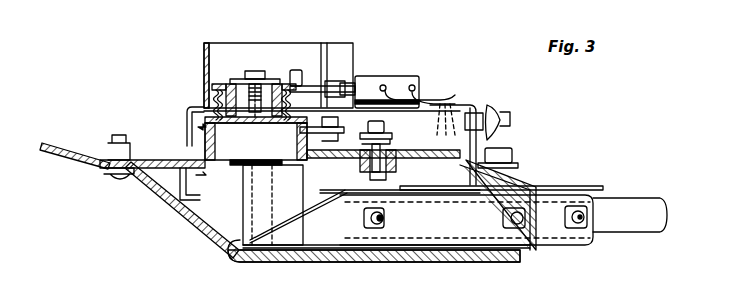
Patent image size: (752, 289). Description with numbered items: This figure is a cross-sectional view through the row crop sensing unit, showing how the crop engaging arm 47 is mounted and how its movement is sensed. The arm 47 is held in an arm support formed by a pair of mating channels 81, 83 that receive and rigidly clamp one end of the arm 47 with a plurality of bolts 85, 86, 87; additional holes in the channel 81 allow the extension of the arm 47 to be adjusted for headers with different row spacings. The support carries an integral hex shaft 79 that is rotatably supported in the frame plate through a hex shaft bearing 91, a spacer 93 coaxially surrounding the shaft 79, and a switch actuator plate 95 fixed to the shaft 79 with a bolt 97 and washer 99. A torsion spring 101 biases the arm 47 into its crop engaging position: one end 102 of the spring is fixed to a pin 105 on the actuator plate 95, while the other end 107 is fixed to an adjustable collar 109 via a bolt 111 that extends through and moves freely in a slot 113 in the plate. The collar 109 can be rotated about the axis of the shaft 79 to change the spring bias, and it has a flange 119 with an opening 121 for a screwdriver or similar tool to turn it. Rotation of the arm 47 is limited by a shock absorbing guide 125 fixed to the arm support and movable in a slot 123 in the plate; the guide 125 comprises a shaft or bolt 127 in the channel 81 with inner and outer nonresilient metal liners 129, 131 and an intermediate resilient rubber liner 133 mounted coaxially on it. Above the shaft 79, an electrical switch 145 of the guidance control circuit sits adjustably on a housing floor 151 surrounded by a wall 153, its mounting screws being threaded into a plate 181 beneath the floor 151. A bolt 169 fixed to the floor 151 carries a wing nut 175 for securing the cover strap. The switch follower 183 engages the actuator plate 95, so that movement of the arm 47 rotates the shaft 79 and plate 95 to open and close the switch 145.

The arm 47 is at (630, 198).
The hex shaft 79 is at (240, 254).
The channel 81 is at (568, 188).
The channel 83 is at (588, 242).
The bolt 85 is at (377, 226).
The bolt 86 is at (518, 228).
The bolt 87 is at (585, 220).
The hex shaft bearing 91 is at (200, 238).
The spacer 93 is at (222, 147).
The switch actuator plate 95 is at (212, 86).
The bolt 97 is at (256, 70).
The washer 99 is at (236, 80).
The torsion spring 101 is at (190, 118).
The spring end 102 is at (322, 88).
The pin 105 is at (296, 70).
The spring end 107 is at (370, 142).
The adjustable collar 109 is at (165, 175).
The bolt 111 is at (345, 128).
The slot 113 is at (320, 210).
The flange 119 is at (188, 200).
The opening 121 is at (185, 185).
The slot 123 is at (512, 155).
The shock absorbing guide 125 is at (417, 152).
The shaft or bolt 127 is at (382, 222).
The inner nonresilient liner 129 is at (392, 198).
The outer nonresilient liner 131 is at (430, 195).
The intermediate resilient liner 133 is at (396, 168).
The electrical switch 145 is at (402, 76).
The floor 151 is at (470, 105).
The wall 153 is at (215, 45).
The bolt 169 is at (500, 123).
The wing nut 175 is at (500, 110).
The plate 181 is at (440, 102).
The switch follower 183 is at (350, 84).